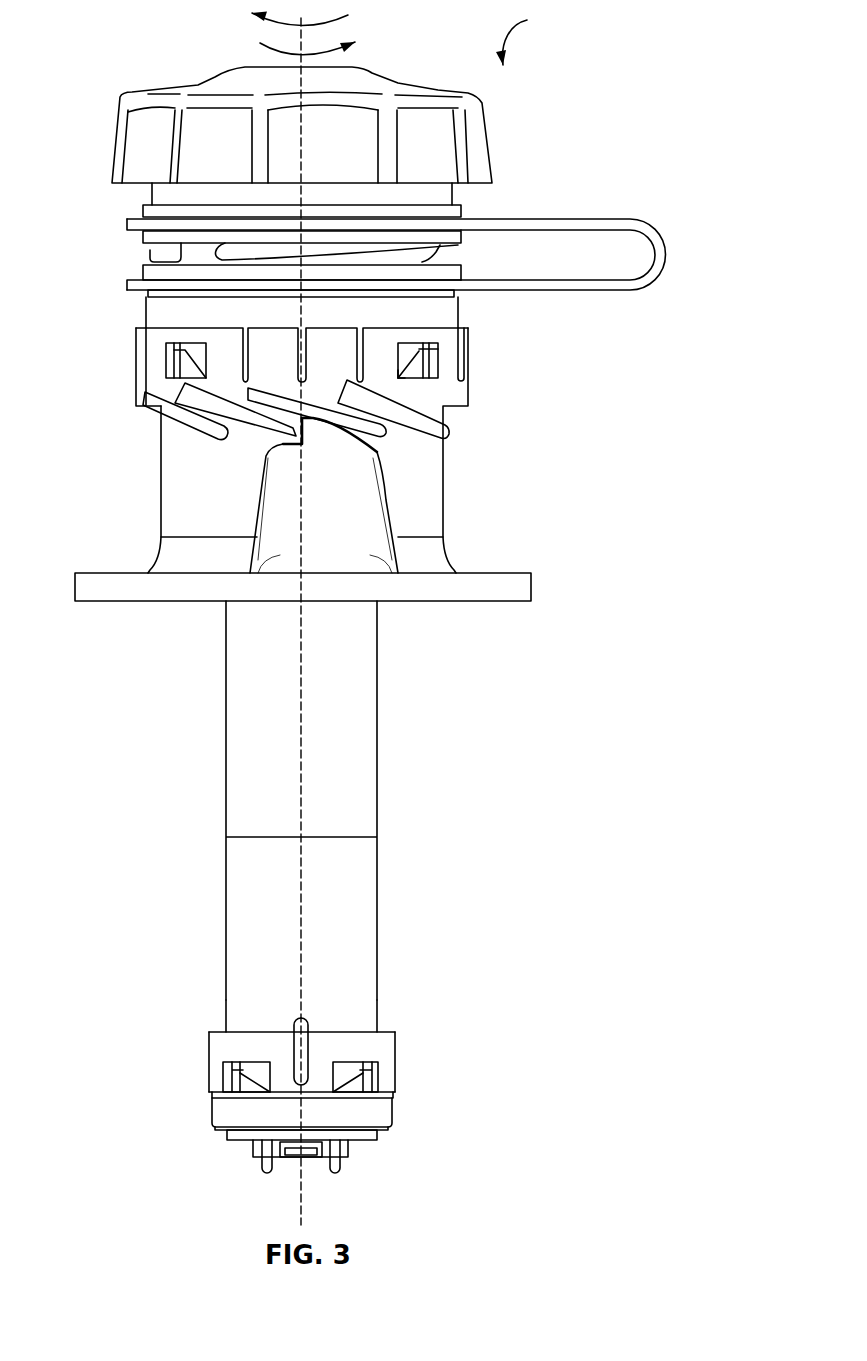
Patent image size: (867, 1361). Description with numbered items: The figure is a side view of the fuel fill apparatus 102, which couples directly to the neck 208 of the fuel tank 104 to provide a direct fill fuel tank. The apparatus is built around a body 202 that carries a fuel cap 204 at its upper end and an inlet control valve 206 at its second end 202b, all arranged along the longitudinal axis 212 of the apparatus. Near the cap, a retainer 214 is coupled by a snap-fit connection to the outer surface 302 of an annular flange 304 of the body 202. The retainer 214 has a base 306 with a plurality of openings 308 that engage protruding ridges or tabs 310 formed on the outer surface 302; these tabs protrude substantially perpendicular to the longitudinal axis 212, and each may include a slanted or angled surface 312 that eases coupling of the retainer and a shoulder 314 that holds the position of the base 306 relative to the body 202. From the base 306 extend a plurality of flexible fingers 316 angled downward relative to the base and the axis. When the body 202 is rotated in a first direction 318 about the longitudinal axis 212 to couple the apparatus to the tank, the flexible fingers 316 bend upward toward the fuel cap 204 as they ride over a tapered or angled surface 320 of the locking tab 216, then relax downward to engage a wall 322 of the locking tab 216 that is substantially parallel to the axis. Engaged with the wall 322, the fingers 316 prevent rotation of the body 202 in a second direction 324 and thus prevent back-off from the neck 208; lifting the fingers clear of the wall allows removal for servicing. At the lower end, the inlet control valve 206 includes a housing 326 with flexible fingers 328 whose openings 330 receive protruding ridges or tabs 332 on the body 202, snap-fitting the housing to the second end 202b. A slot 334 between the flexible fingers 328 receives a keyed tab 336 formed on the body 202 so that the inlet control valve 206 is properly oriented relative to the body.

The fuel fill apparatus 102 is at (533, 37).
The fuel tank 104 is at (522, 590).
The body 202 is at (377, 765).
The second end of the body 202b is at (370, 1013).
The fuel cap 204 is at (482, 135).
The inlet control valve 206 is at (223, 1128).
The neck 208 is at (430, 448).
The longitudinal axis 212 is at (302, 892).
The retainer 214 is at (470, 347).
The locking tab 216 is at (368, 533).
The outer surface 302 is at (173, 307).
The annular flange 304 is at (143, 315).
The base 306 is at (135, 363).
The openings 308 is at (170, 373).
The protruding ridges or tabs 310 is at (183, 350).
The slanted or angled surface 312 is at (420, 370).
The shoulder 314 is at (423, 348).
The flexible fingers 316 is at (195, 427).
The first direction 318 is at (348, 15).
The tapered or angled surface 320 is at (350, 443).
The wall 322 is at (303, 436).
The second direction 324 is at (260, 43).
The housing 326 is at (393, 1037).
The flexible fingers 328 is at (208, 1043).
The openings 330 is at (227, 1088).
The protruding ridges or tabs 332 is at (243, 1070).
The slot 334 is at (287, 1052).
The keyed tab 336 is at (290, 1025).